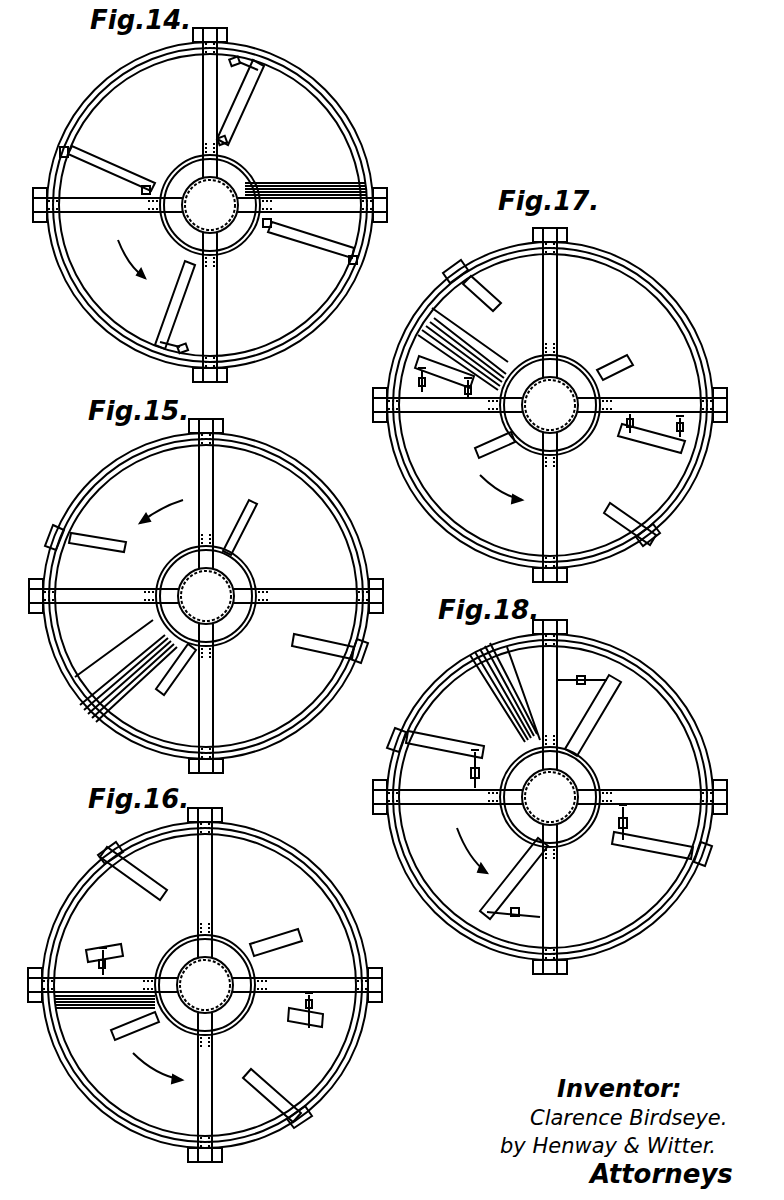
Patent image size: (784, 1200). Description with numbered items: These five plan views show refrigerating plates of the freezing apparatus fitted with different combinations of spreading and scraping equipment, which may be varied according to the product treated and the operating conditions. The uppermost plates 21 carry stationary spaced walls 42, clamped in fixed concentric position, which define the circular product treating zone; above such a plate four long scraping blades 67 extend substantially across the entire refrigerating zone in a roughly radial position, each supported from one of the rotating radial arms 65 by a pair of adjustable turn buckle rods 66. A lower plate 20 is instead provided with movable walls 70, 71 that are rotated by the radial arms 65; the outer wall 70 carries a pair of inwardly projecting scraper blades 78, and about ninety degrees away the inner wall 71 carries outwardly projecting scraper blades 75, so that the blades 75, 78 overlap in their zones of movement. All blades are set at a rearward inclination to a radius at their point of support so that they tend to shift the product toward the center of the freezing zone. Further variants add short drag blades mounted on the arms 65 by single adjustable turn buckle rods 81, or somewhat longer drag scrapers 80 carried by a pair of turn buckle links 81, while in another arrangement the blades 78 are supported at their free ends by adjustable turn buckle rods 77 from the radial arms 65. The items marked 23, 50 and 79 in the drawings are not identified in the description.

In FIG. 15, the lower plate 20 is at (330, 533).
In FIG. 16, the lower plate 20 is at (260, 847).
In FIG. 17, the lower plate 20 is at (660, 307).
In FIG. 18, the lower plate 20 is at (673, 733).
In FIG. 14, the upper plate 21 is at (322, 120).
In FIG. 14, the sliced bread pieces 23 is at (327, 192).
In FIG. 15, the sliced bread pieces 23 is at (103, 718).
In FIG. 16, the sliced bread pieces 23 is at (88, 1002).
In FIG. 17, the sliced bread pieces 23 is at (427, 343).
In FIG. 18, the sliced bread pieces 23 is at (490, 682).
In FIG. 14, the stationary spaced wall 42 is at (350, 133).
In FIG. 14, the hub bore 50 is at (225, 230).
In FIG. 14, the radial arm 65 is at (208, 97).
In FIG. 15, the radial arm 65 is at (313, 597).
In FIG. 16, the radial arm 65 is at (327, 987).
In FIG. 17, the radial arm 65 is at (556, 285).
In FIG. 18, the radial arm 65 is at (653, 797).
In FIG. 14, the adjustable turn buckle rod 66 is at (238, 60).
In FIG. 14, the long scraping blade 67 is at (245, 97).
In FIG. 15, the movable outer wall 70 is at (358, 555).
In FIG. 16, the movable outer wall 70 is at (320, 880).
In FIG. 17, the movable outer wall 70 is at (703, 357).
In FIG. 18, the movable outer wall 70 is at (698, 758).
In FIG. 15, the movable inner wall 71 is at (233, 647).
In FIG. 16, the movable inner wall 71 is at (172, 937).
In FIG. 17, the movable inner wall 71 is at (578, 457).
In FIG. 18, the movable inner wall 71 is at (597, 765).
In FIG. 15, the outwardly projecting scraper blade 75 is at (250, 515).
In FIG. 16, the outwardly projecting scraper blade 75 is at (127, 1033).
In FIG. 18, the adjustable turn buckle rod 77 is at (584, 676).
In FIG. 15, the inwardly projecting scraper blade 78 is at (95, 540).
In FIG. 16, the inwardly projecting scraper blade 78 is at (147, 878).
In FIG. 18, the inwardly projecting scraper blade 78 is at (600, 697).
In FIG. 15, the rim tab 79 is at (50, 534).
In FIG. 16, the rim tab 79 is at (104, 850).
In FIG. 16, the drag scraper 80 is at (312, 1022).
In FIG. 17, the drag scraper 80 is at (663, 443).
In FIG. 16, the turn buckle rod 81 is at (313, 1006).
In FIG. 17, the turn buckle rod 81 is at (685, 428).